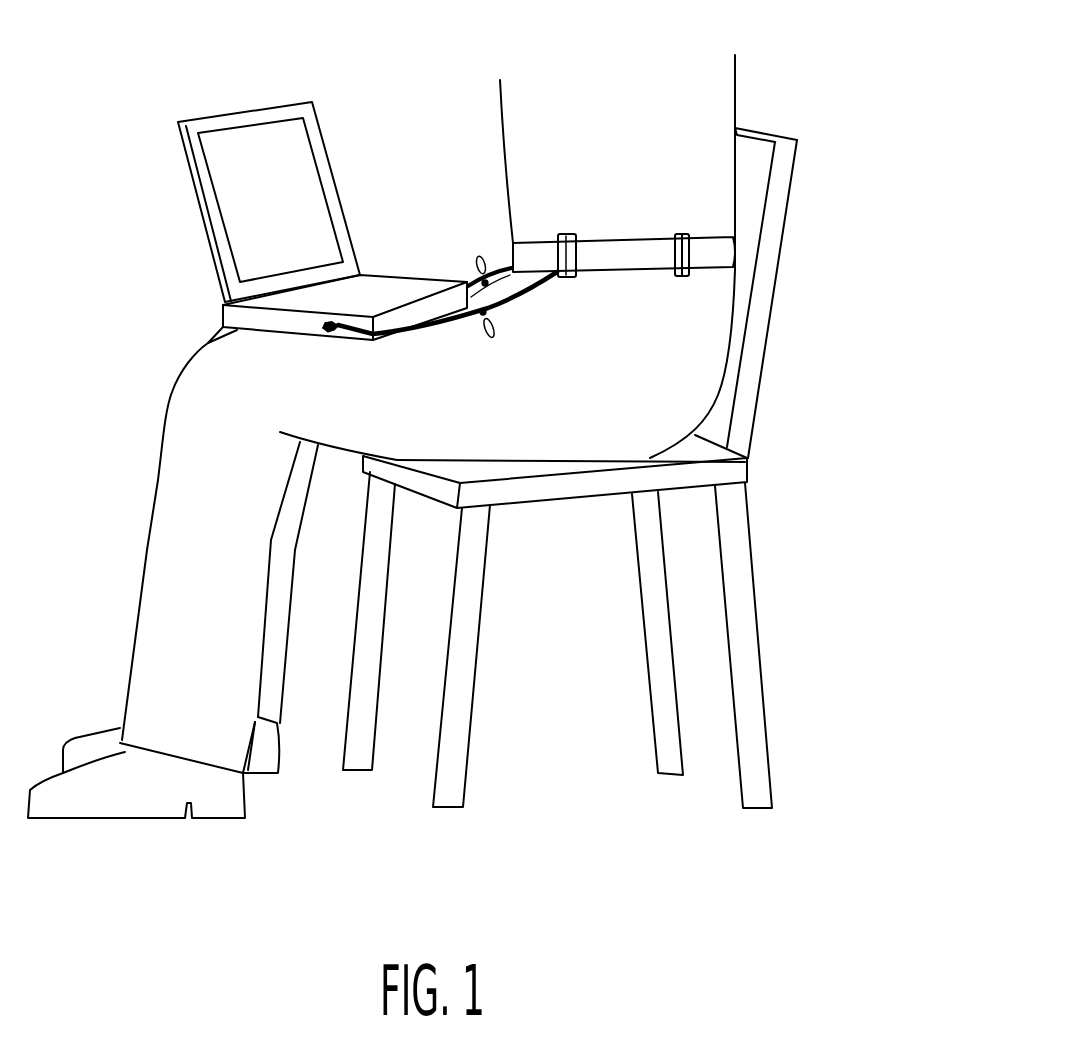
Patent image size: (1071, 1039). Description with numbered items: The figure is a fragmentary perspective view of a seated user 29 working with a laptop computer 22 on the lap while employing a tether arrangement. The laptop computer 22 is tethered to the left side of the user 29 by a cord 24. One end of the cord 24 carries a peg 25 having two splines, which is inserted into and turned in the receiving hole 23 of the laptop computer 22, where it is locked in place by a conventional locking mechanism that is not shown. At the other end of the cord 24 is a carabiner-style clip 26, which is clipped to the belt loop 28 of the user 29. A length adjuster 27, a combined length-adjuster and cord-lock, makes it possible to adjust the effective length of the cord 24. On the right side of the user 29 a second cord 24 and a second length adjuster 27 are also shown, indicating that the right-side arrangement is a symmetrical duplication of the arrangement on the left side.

The laptop computer 22 is at (223, 188).
The receiving hole 23 is at (325, 334).
The cord 24 is at (497, 250).
The peg 25 is at (342, 333).
The carabiner-style clip 26 is at (546, 262).
The length adjuster 27 is at (478, 256).
The belt loop 28 is at (562, 275).
The user 29 is at (520, 107).